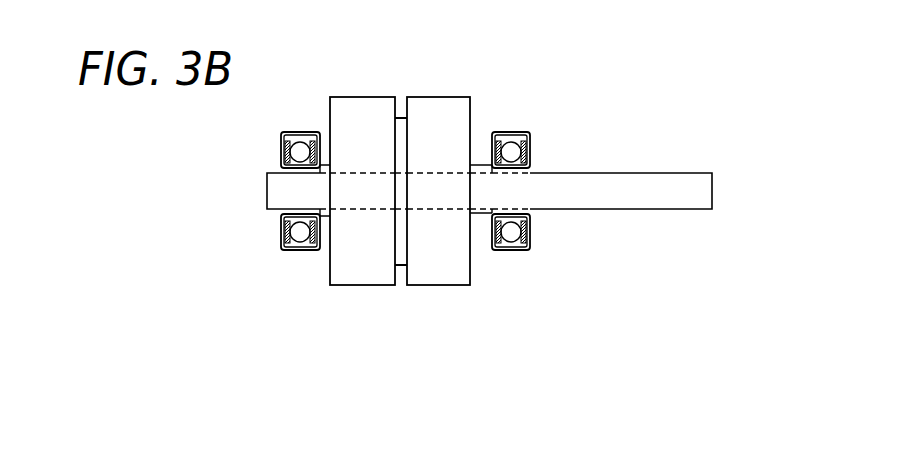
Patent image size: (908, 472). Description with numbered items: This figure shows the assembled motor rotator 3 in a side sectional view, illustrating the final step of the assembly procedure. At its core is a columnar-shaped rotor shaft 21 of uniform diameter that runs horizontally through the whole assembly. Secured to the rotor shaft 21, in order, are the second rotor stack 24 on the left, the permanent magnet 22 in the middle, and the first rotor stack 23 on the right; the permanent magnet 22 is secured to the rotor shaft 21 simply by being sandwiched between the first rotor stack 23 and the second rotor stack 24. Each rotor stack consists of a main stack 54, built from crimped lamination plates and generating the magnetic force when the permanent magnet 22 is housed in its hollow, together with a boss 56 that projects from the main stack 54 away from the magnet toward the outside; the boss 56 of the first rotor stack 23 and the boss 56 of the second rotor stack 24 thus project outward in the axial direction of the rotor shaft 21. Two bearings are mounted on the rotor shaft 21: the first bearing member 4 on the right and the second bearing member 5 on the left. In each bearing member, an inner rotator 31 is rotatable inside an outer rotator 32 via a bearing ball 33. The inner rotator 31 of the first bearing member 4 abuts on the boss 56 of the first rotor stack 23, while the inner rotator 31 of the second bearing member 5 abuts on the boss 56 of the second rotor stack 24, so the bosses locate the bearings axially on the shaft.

The motor rotator 3 is at (668, 79).
The rotor shaft 21 is at (616, 211).
The permanent magnet 22 is at (400, 268).
The first rotor stack 23 is at (485, 350).
The second rotor stack 24 is at (390, 350).
The main stack 54 is at (373, 287).
The boss 56 is at (323, 218).
The second bearing member 5 is at (300, 350).
The first bearing member 4 is at (598, 350).
The inner rotator 31 is at (282, 215).
The outer rotator 32 is at (299, 233).
The bearing ball 33 is at (302, 250).